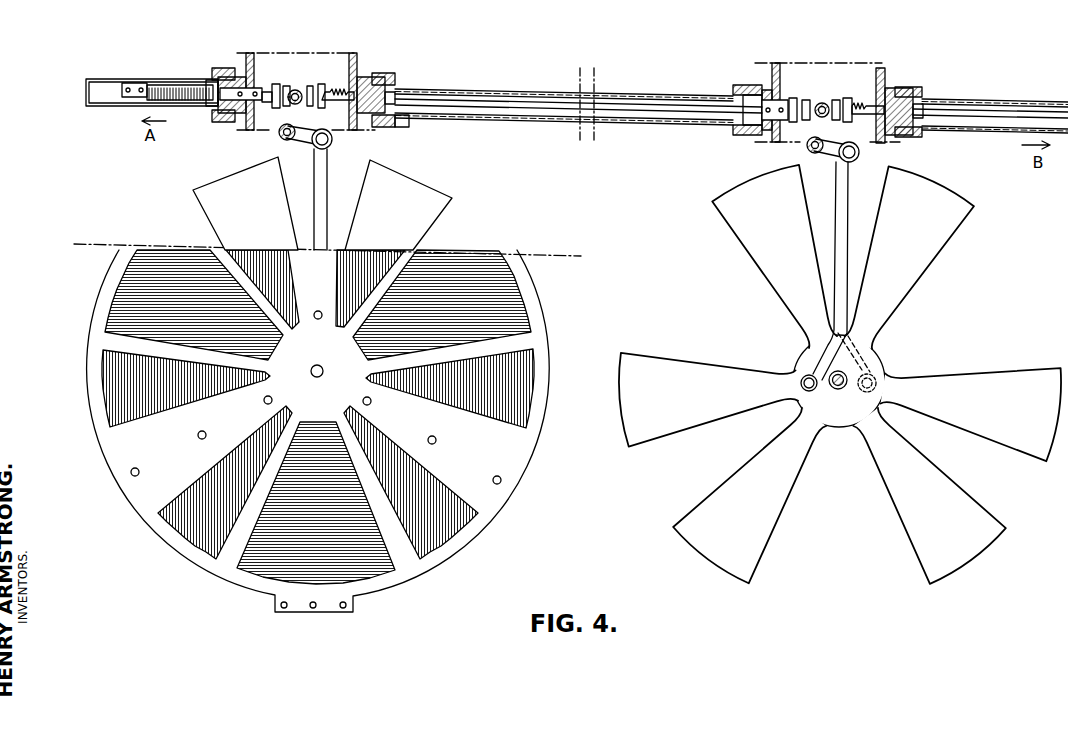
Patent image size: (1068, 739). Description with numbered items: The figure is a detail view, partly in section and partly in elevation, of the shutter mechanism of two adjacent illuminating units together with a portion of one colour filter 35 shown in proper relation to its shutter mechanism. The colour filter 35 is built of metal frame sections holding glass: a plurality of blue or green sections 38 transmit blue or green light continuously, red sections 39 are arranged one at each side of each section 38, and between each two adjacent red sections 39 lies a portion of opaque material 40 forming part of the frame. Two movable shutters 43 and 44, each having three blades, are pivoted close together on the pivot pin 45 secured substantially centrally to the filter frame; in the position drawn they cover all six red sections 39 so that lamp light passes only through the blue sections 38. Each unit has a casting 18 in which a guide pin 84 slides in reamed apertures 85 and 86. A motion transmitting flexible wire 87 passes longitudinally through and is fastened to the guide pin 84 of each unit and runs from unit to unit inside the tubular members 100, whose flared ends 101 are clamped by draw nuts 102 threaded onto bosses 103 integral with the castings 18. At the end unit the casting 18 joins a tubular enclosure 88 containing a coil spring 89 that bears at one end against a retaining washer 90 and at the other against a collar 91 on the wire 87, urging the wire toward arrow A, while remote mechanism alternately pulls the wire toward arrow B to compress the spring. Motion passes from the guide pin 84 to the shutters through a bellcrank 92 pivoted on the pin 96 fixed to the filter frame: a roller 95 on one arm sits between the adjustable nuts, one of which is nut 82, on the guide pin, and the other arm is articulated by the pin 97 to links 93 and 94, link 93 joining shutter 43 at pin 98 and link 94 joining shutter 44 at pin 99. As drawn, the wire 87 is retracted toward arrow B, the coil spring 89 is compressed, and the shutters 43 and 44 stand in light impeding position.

The casting 18 is at (248, 62).
The colour filter 35 is at (518, 488).
The filter sections 38 is at (130, 295).
The red filter sections 39 is at (113, 398).
The opaque material 40 is at (316, 374).
The shutter 43 is at (193, 190).
The shutter 44 is at (453, 198).
The pivot pin 45 is at (316, 378).
The adjustable nut 82 is at (313, 95).
The guide pin 84 is at (260, 90).
The reamed aperture 85 is at (225, 78).
The reamed aperture 86 is at (398, 92).
The motion transmitting flexible wire 87 is at (1012, 108).
The tubular enclosure 88 is at (95, 79).
The coil spring 89 is at (172, 104).
The retaining washer 90 is at (210, 108).
The collar 91 is at (135, 83).
The bellcrank 92 is at (280, 135).
The link 93 is at (314, 198).
The link 94 is at (880, 360).
The roller 95 is at (296, 89).
The pin 96 is at (289, 141).
The pin 97 is at (333, 140).
The pin 98 is at (803, 392).
The pin 99 is at (878, 396).
The tubular members 100 is at (503, 120).
The flared ends 101 is at (398, 124).
The draw nuts 102 is at (213, 72).
The bosses 103 is at (372, 80).